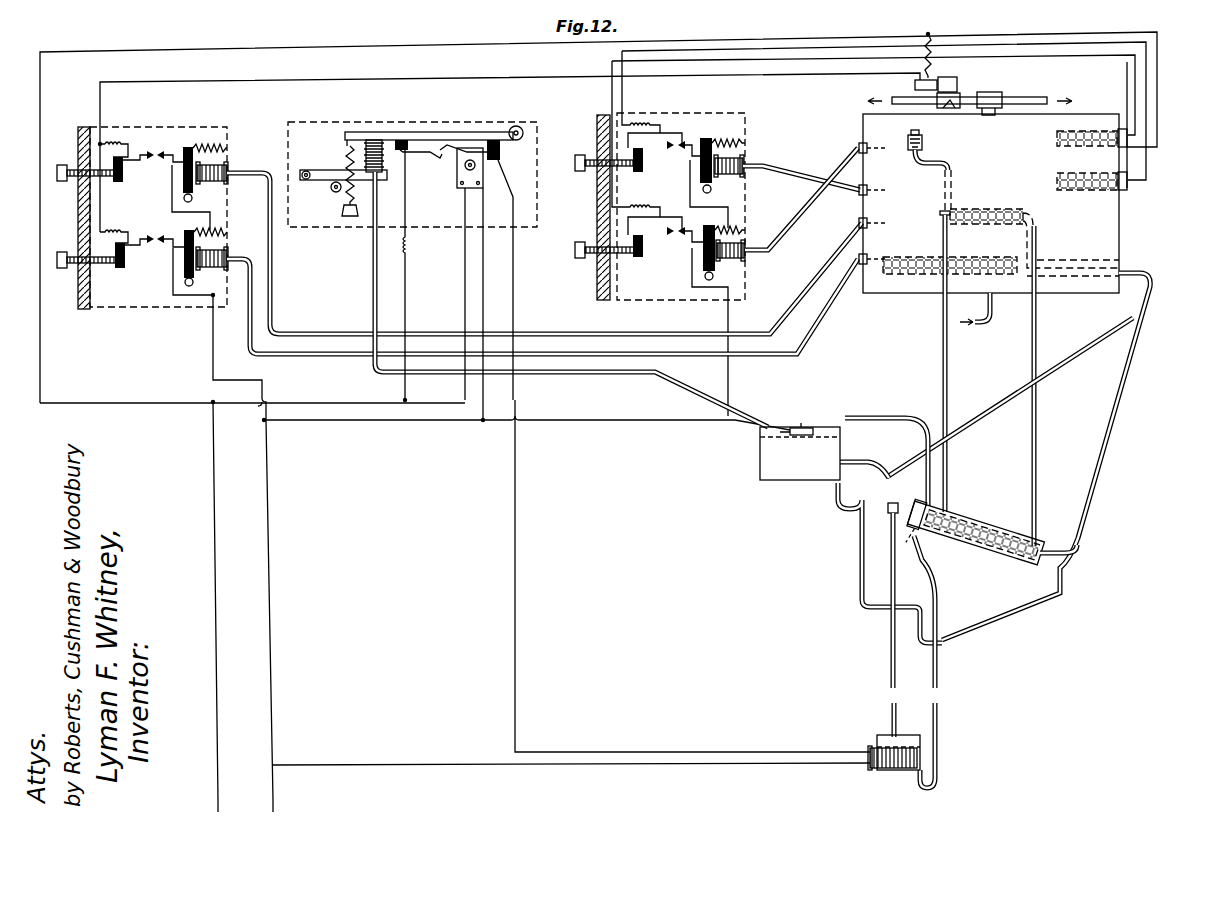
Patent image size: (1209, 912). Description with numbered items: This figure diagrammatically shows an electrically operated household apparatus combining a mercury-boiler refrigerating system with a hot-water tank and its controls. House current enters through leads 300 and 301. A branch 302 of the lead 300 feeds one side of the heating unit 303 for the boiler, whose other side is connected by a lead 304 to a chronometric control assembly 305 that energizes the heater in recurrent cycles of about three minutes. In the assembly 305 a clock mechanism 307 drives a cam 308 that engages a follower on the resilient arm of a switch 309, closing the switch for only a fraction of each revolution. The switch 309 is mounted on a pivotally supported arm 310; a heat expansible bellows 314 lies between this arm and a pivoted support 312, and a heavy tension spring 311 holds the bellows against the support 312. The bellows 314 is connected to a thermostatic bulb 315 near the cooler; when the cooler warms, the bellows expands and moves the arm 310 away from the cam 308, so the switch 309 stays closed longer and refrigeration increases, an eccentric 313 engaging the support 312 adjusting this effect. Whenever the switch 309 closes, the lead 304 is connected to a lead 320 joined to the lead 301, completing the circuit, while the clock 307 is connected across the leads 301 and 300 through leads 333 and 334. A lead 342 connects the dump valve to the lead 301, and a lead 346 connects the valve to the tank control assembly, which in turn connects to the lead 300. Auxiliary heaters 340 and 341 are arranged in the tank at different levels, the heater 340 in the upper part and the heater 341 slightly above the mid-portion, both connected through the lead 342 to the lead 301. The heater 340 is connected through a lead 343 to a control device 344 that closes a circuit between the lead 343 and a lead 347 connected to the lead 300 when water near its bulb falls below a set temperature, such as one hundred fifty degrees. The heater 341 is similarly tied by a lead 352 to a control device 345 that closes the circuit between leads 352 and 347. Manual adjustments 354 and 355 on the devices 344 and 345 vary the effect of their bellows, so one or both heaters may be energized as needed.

The lead 342 is at (271, 53).
The lead 346 is at (271, 81).
The lead 352 is at (623, 96).
The lead 343 is at (610, 96).
The lead 301 is at (214, 792).
The lead 300 is at (280, 793).
The branch 302 is at (512, 776).
The lead 304 is at (514, 736).
The lead 347 is at (543, 420).
The chronometric control assembly 305 is at (528, 262).
The pivotally supported arm 310 is at (433, 133).
The pivoted support 312 is at (333, 170).
The eccentric 313 is at (331, 189).
The tension spring 311 is at (343, 200).
The heat expansible bellows 314 is at (378, 150).
The switch 309 is at (431, 170).
The cam 308 is at (425, 174).
The clock mechanism 307 is at (456, 188).
The lead 320 is at (405, 266).
The lead 333 is at (463, 295).
The lead 334 is at (485, 293).
The manual adjustment 355 is at (582, 172).
The manual adjustment 354 is at (582, 257).
The control device 345 is at (671, 172).
The control device 344 is at (666, 264).
The heater 340 is at (1057, 143).
The heater 341 is at (1057, 185).
The thermostatic bulb 315 is at (798, 425).
The heating unit 303 is at (882, 770).